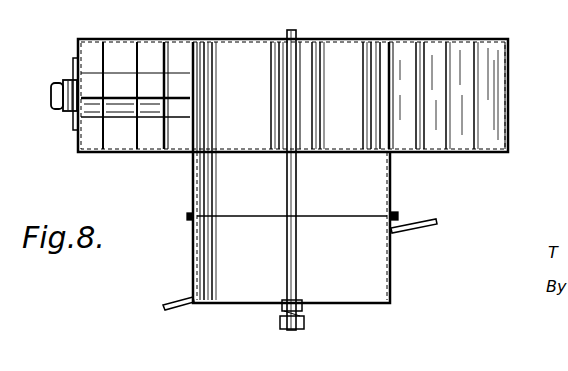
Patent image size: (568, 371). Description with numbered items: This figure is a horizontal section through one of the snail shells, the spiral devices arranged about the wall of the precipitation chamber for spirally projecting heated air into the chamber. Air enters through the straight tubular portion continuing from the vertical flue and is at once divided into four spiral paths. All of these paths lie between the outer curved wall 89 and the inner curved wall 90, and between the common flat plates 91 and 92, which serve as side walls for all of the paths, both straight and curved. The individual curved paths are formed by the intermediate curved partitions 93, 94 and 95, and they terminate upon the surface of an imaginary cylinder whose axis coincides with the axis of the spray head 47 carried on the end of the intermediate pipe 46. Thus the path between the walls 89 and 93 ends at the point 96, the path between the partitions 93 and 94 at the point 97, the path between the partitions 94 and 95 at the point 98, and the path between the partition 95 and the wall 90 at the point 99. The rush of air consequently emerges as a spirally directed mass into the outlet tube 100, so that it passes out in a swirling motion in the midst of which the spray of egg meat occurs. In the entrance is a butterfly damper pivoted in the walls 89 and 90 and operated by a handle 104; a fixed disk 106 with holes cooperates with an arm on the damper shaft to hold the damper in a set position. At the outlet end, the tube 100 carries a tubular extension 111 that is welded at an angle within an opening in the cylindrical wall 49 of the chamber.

The intermediate pipe 46 is at (293, 32).
The spray head 47 is at (306, 323).
The cylindrical portion 49 is at (170, 300).
The outer curved wall 89 is at (508, 70).
The inner curved wall 90 is at (206, 102).
The flat plate 91 is at (346, 40).
The flat plate 92 is at (470, 152).
The intermediate curved partition 93 is at (271, 120).
The intermediate curved partition 94 is at (316, 58).
The intermediate curved partition 95 is at (365, 73).
The terminating point 96 is at (241, 146).
The terminating point 97 is at (273, 152).
The terminating point 98 is at (335, 152).
The terminating point 99 is at (371, 152).
The outlet tube 100 is at (189, 214).
The handle 104 is at (52, 106).
The fixed disk 106 is at (73, 122).
The tubular extension 111 is at (391, 270).